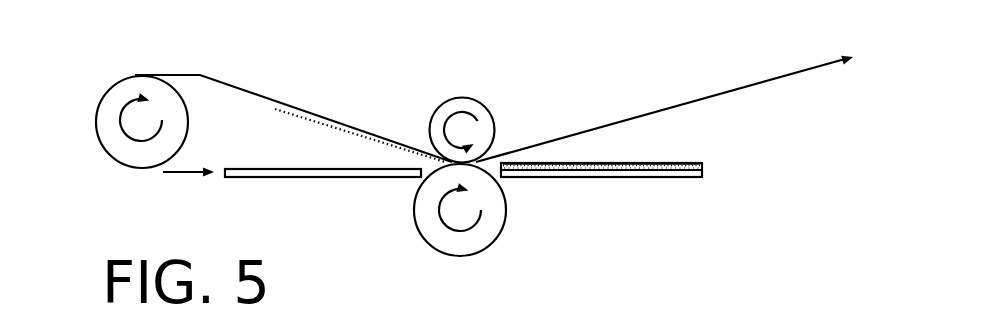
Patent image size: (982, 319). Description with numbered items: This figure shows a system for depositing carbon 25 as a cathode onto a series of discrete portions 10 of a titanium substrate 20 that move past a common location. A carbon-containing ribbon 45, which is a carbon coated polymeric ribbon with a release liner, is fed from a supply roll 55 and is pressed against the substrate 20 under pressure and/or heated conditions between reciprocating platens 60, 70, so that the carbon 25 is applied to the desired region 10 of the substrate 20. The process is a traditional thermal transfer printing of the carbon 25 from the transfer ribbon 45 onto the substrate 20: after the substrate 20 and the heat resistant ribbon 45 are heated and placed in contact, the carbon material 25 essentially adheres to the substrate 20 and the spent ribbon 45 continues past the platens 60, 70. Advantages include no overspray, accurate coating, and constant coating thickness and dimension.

The discrete portion of titanium substrate 10 is at (583, 158).
The titanium substrate 20 is at (275, 177).
The carbon 25 is at (322, 123).
The carbon-containing ribbon 45 is at (223, 80).
The supply roll 55 is at (95, 108).
The reciprocating platen 60 is at (463, 98).
The reciprocating platen 70 is at (453, 254).